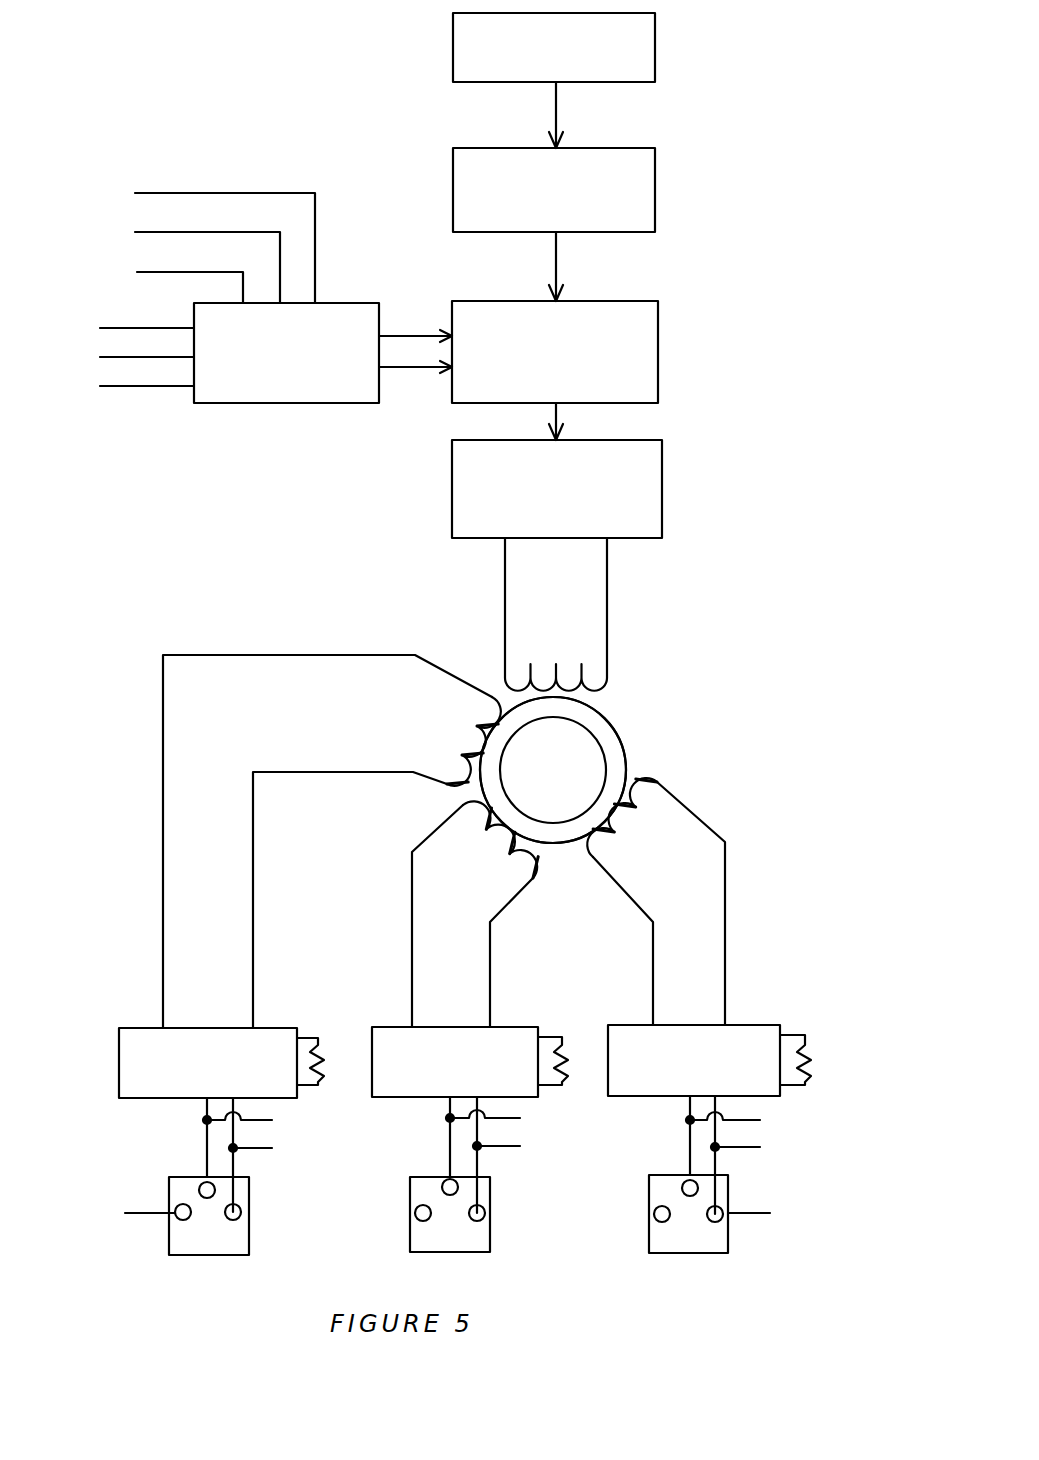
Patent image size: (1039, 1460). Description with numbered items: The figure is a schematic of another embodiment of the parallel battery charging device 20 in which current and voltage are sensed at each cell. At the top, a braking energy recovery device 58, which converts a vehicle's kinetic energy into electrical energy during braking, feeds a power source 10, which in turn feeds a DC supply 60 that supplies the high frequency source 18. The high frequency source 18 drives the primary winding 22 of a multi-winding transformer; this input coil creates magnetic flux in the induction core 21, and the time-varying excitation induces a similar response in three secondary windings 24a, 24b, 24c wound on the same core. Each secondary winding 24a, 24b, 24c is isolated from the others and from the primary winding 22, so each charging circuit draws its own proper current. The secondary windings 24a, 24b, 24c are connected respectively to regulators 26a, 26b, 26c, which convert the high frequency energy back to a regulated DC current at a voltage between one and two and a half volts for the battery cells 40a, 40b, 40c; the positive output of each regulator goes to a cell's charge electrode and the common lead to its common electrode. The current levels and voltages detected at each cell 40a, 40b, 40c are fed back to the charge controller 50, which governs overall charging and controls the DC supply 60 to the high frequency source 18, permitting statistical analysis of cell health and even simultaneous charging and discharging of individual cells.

The braking energy recovery device 58 is at (655, 52).
The power source 10 is at (655, 190).
The DC supply 60 is at (658, 342).
The high frequency source 18 is at (662, 462).
The charge controller 50 is at (252, 418).
The primary winding 22 is at (607, 633).
The induction core 21 is at (613, 720).
The charging device 20 is at (636, 748).
The secondary winding 24a is at (468, 738).
The secondary winding 24b is at (478, 884).
The secondary winding 24c is at (640, 848).
The regulator 26a is at (272, 1028).
The regulator 26b is at (505, 1027).
The regulator 26c is at (745, 1025).
The battery cell 40a is at (249, 1255).
The battery cell 40b is at (483, 1252).
The battery cell 40c is at (718, 1253).